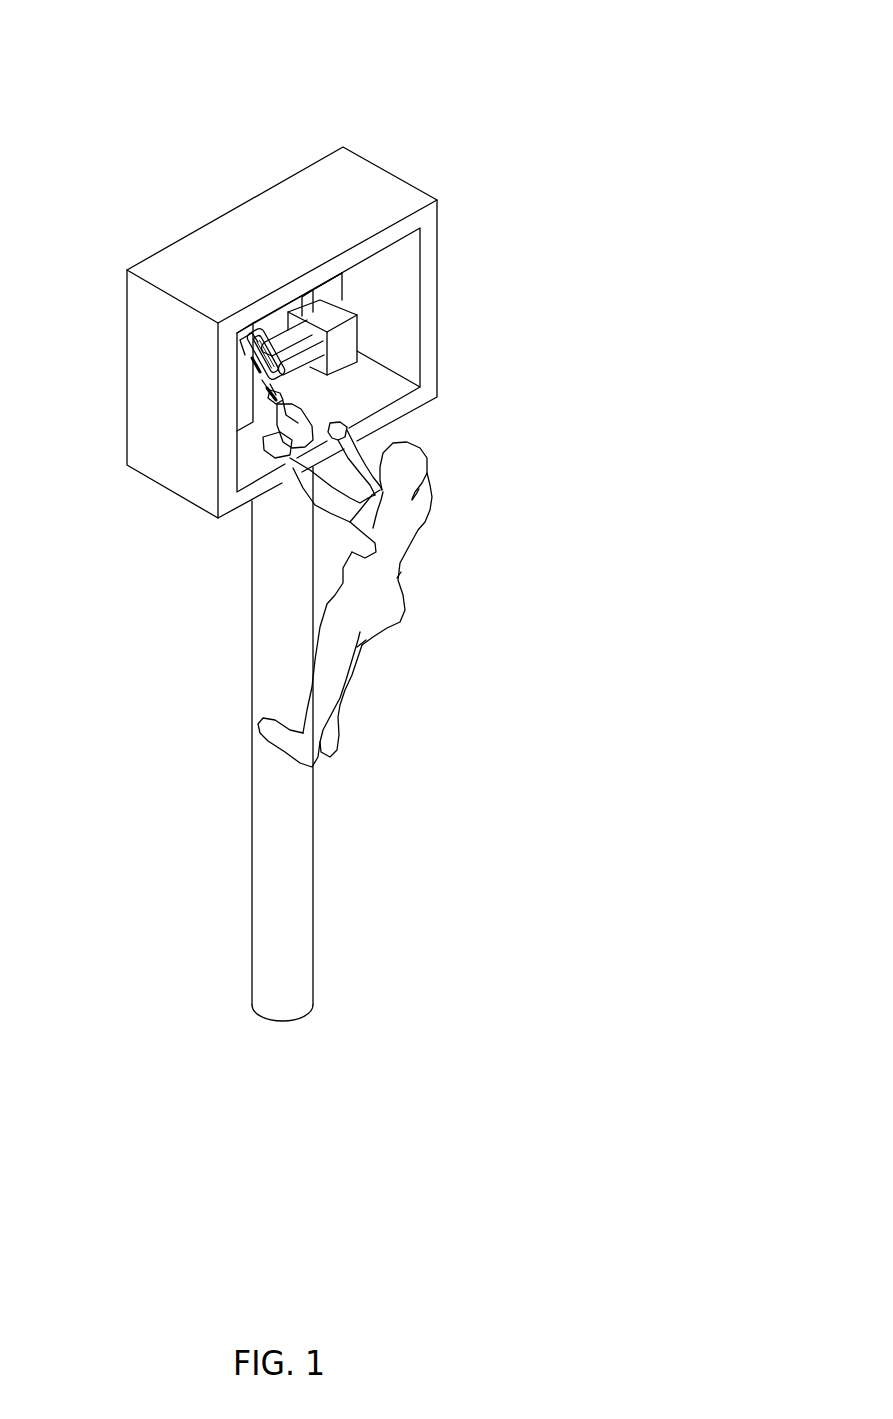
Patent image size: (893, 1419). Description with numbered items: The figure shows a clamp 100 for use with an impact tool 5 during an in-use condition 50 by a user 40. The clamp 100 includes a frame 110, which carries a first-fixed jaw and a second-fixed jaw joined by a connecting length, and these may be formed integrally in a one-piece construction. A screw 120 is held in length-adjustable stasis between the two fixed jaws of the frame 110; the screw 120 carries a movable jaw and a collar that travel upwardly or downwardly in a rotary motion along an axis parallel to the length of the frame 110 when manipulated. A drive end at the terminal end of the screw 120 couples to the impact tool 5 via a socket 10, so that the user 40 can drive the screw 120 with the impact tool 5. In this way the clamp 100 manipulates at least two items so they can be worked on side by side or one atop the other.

The impact tool 5 is at (295, 446).
The socket 10 is at (277, 400).
The user 40 is at (422, 538).
The in-use condition 50 is at (645, 44).
The clamp 100 is at (643, 72).
The frame 110 is at (257, 365).
The screw 120 is at (197, 247).